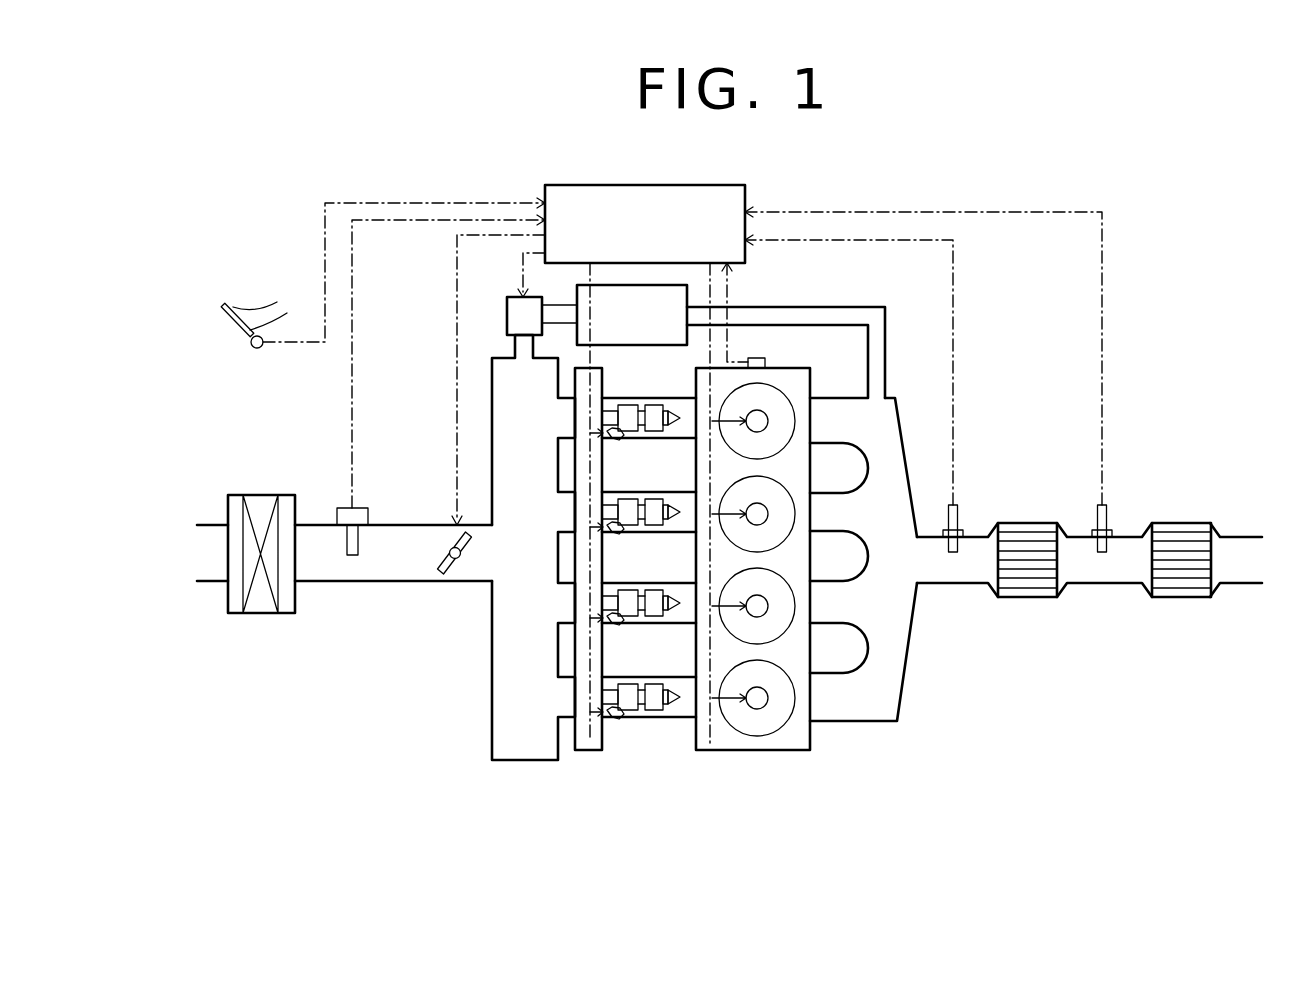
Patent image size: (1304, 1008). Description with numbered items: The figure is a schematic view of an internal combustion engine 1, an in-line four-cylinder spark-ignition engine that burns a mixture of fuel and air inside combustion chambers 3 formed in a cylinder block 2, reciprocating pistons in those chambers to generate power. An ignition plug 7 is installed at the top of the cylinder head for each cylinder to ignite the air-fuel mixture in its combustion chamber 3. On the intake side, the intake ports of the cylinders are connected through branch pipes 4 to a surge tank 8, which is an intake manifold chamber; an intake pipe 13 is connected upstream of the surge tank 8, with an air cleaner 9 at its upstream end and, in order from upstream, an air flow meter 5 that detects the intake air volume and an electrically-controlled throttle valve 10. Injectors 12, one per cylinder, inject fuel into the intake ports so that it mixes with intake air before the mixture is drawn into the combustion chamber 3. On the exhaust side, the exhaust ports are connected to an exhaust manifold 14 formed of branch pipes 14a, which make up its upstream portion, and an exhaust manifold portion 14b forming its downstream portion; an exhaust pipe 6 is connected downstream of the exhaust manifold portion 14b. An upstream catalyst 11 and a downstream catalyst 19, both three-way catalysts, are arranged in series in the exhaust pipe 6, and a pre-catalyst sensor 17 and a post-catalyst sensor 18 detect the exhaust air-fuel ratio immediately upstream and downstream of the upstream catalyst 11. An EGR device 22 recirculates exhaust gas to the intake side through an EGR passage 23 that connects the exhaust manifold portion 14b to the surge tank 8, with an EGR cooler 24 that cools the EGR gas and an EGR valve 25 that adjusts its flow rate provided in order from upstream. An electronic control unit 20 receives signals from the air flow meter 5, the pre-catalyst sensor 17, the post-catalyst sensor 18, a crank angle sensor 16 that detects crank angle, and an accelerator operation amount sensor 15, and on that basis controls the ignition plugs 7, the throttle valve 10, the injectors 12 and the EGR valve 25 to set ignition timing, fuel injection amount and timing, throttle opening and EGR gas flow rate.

The internal combustion engine 1 is at (453, 738).
The cylinder block 2 is at (780, 750).
The combustion chamber 3 is at (762, 722).
The branch pipe 4 is at (683, 718).
The air flow meter 5 is at (357, 508).
The exhaust pipe 6 is at (943, 583).
The ignition plug 7 is at (750, 703).
The surge tank 8 is at (523, 760).
The air cleaner 9 is at (262, 613).
The throttle valve 10 is at (447, 574).
The upstream catalyst 11 is at (1028, 523).
The injector 12 is at (650, 708).
The intake pipe 13 is at (347, 582).
The exhaust manifold 14 is at (908, 712).
The branch pipe 14a is at (838, 722).
The exhaust manifold portion 14b is at (903, 675).
The accelerator operation amount sensor 15 is at (257, 350).
The crank angle sensor 16 is at (756, 358).
The pre-catalyst sensor 17 is at (955, 505).
The post-catalyst sensor 18 is at (1100, 508).
The downstream catalyst 19 is at (1180, 600).
The electronic control unit 20 is at (642, 185).
The EGR device 22 is at (873, 298).
The EGR passage 23 is at (793, 307).
The EGR cooler 24 is at (612, 345).
The EGR valve 25 is at (507, 310).